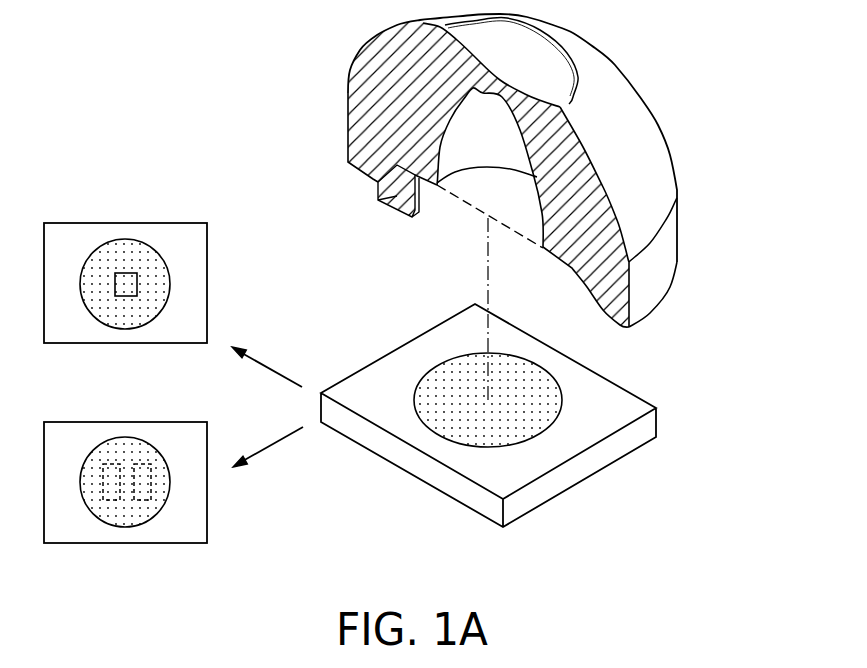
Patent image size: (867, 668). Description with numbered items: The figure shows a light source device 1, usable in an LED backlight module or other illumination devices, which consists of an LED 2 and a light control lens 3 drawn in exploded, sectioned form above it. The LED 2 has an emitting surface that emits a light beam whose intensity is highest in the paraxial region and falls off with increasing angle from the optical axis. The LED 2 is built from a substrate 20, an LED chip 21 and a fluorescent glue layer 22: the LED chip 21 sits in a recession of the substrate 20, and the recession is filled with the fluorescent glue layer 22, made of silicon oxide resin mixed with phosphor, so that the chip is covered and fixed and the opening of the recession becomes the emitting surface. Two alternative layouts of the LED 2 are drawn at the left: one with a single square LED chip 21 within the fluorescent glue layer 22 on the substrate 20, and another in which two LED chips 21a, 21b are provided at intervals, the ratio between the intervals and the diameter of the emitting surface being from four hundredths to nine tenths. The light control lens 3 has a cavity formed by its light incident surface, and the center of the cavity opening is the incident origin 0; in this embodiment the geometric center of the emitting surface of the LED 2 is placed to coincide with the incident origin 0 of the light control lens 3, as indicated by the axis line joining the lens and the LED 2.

The light source device 1 is at (562, 268).
The LED 2 is at (360, 428).
The light control lens 3 is at (618, 108).
The incident origin 0 is at (488, 217).
The substrate 20 is at (65, 236).
The LED chip 21 is at (137, 287).
The LED chip 21a is at (110, 498).
The LED chip 21b is at (140, 498).
The fluorescent glue layer 22 is at (157, 266).